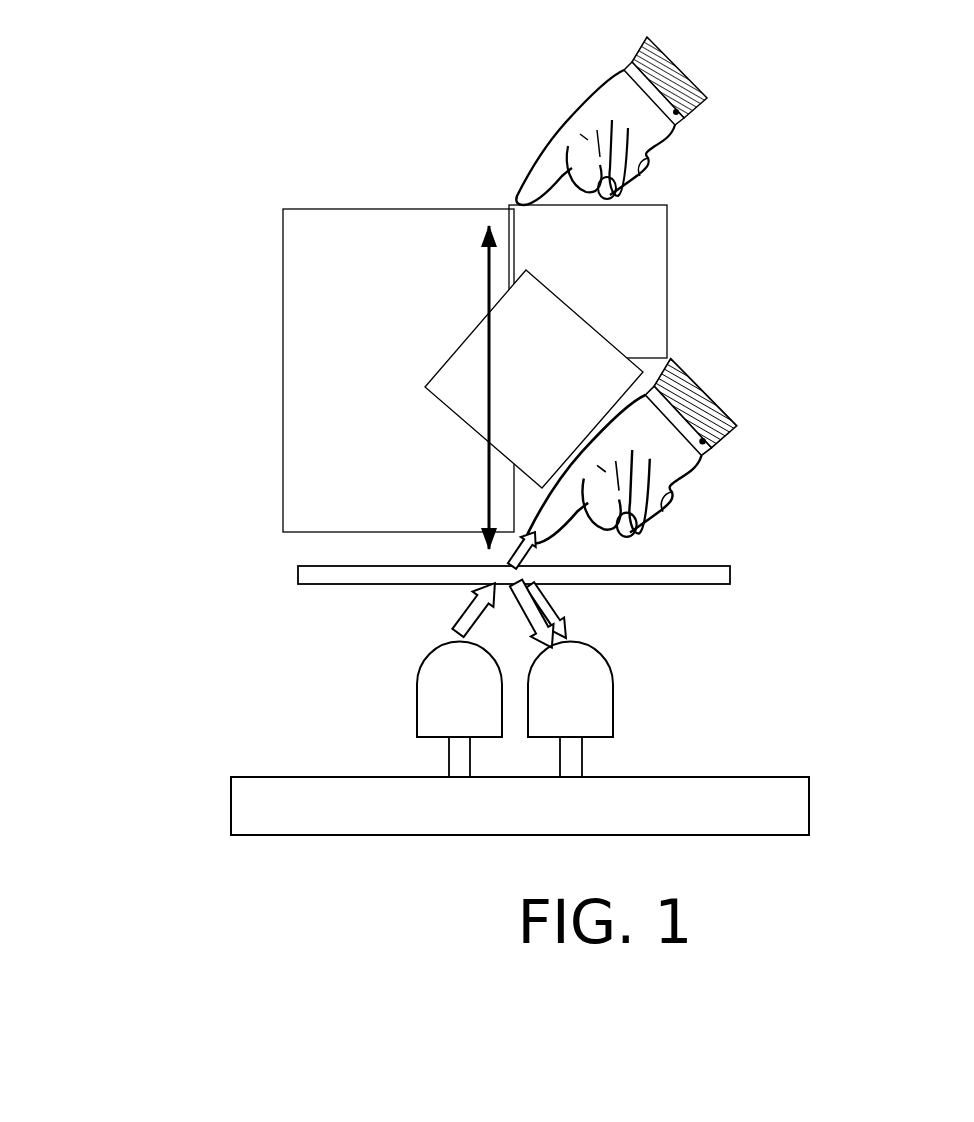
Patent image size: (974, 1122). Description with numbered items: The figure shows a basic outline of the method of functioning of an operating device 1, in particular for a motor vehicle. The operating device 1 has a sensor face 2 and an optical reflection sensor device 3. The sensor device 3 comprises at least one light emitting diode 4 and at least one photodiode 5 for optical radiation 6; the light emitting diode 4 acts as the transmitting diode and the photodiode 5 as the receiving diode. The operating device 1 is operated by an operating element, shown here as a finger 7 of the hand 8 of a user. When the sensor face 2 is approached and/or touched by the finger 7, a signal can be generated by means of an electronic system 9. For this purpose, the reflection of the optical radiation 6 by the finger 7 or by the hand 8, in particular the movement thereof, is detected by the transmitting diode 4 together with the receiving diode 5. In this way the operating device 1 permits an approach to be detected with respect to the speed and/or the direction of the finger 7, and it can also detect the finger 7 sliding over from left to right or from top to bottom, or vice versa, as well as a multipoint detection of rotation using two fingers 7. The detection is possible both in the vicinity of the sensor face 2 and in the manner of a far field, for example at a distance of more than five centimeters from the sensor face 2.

The operating device 1 is at (740, 320).
The sensor face 2 is at (362, 565).
The optical reflection sensor device 3 is at (504, 710).
The light emitting diode 4 is at (457, 687).
The photodiode 5 is at (595, 687).
The optical radiation 6 is at (472, 599).
The finger 7 is at (567, 163).
The hand 8 is at (648, 97).
The electronic system 9 is at (788, 810).